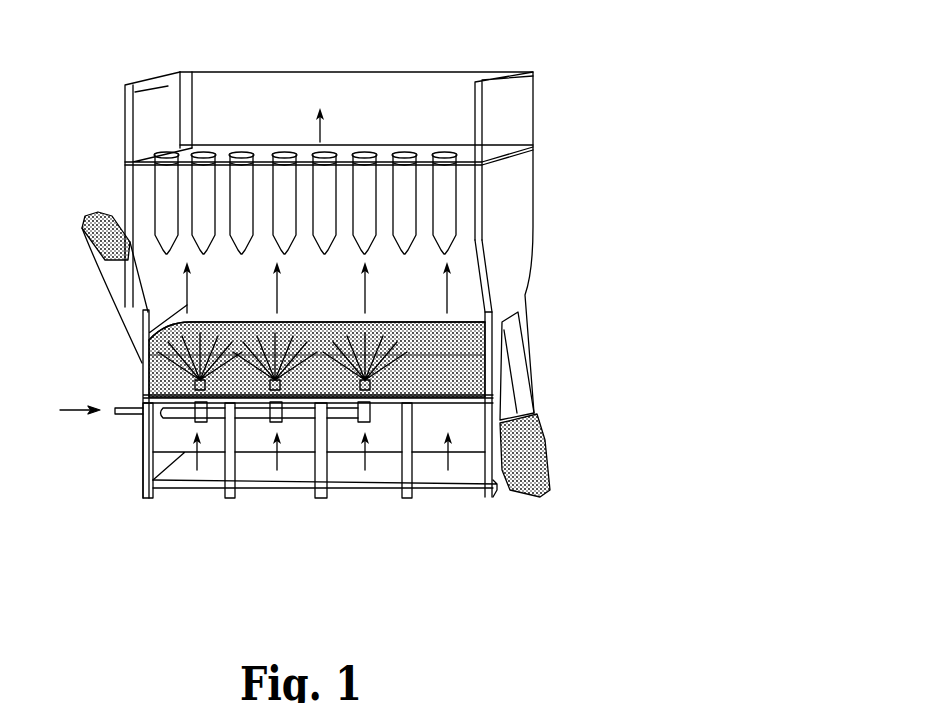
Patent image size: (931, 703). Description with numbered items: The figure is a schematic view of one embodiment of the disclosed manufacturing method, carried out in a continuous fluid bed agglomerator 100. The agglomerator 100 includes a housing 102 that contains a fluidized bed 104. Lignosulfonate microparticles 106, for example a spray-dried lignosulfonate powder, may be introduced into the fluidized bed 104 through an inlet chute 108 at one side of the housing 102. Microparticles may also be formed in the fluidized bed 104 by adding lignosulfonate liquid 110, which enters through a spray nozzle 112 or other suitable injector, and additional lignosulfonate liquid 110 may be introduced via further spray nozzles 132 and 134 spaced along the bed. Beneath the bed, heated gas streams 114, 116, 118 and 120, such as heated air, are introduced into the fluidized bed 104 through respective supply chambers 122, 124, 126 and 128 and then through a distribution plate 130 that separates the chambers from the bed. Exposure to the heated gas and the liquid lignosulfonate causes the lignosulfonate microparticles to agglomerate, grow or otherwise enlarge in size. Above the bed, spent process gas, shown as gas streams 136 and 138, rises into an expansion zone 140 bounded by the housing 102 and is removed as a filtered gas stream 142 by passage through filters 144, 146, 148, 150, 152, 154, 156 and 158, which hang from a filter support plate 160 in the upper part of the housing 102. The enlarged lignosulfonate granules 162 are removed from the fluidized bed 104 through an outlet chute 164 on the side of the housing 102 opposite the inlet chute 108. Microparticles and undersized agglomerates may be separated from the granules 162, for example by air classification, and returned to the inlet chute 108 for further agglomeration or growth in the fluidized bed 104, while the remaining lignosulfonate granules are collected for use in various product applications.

The continuous fluid bed agglomerator 100 is at (518, 52).
The housing 102 is at (522, 218).
The fluidized bed 104 is at (467, 375).
The lignosulfonate microparticles 106 is at (98, 240).
The inlet chute 108 is at (115, 287).
The lignosulfonate liquid 110 is at (84, 412).
The spray nozzle 112 is at (200, 385).
The heated gas stream 114 is at (193, 462).
The heated gas stream 116 is at (277, 468).
The heated gas stream 118 is at (340, 466).
The heated gas stream 120 is at (452, 463).
The supply chamber 122 is at (163, 453).
The supply chamber 124 is at (248, 468).
The supply chamber 126 is at (340, 478).
The supply chamber 128 is at (430, 468).
The distribution plate 130 is at (470, 407).
The spray nozzle 132 is at (282, 390).
The spray nozzle 134 is at (368, 390).
The spent process gas stream 136 is at (273, 300).
The spent process gas stream 138 is at (363, 300).
The expansion zone 140 is at (472, 290).
The filtered gas stream 142 is at (328, 128).
The filter 144 is at (165, 200).
The filter 146 is at (200, 185).
The filter 148 is at (240, 178).
The filter 150 is at (285, 180).
The filter 152 is at (327, 177).
The filter 154 is at (403, 175).
The filter 156 is at (447, 185).
The filter 158 is at (447, 187).
The filter support plate 160 is at (347, 152).
The lignosulfonate granules 162 is at (507, 473).
The outlet chute 164 is at (520, 395).